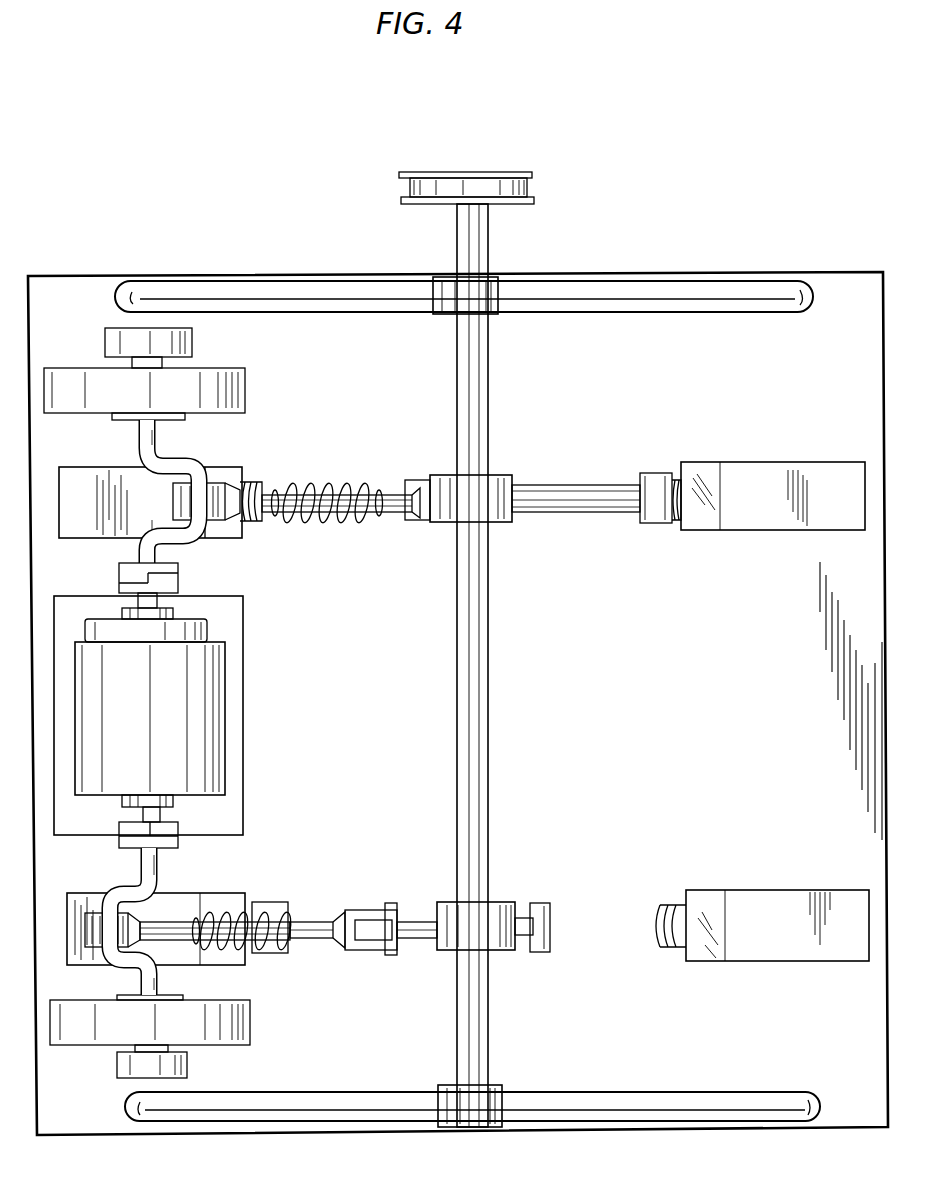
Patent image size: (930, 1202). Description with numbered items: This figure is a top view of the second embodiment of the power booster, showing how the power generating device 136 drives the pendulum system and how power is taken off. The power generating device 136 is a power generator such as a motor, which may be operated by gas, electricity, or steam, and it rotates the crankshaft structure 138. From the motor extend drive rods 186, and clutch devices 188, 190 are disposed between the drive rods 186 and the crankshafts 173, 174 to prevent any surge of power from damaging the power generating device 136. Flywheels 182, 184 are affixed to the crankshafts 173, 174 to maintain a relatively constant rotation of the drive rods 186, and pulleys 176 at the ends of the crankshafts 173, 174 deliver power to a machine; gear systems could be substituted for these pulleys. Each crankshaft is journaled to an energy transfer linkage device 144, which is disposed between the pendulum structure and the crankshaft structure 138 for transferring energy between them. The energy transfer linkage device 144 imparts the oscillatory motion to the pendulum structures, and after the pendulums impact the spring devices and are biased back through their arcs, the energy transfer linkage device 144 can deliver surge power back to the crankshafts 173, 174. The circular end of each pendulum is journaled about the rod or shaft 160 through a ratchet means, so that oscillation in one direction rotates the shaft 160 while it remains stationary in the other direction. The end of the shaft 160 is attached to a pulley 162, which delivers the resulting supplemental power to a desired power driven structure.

The power generating device 136 is at (252, 740).
The crankshaft structure 138 is at (140, 550).
The energy transfer linkage device 144 is at (362, 470).
The rod or shaft 160 is at (488, 240).
The pulley 162 is at (503, 172).
The crankshaft 173 is at (158, 874).
The crankshaft 174 is at (203, 547).
The pulley 176 is at (122, 338).
The flywheel 182 is at (235, 1023).
The flywheel 184 is at (232, 387).
The drive rod 186 is at (165, 600).
The clutch device 188 is at (180, 840).
The clutch device 190 is at (172, 583).